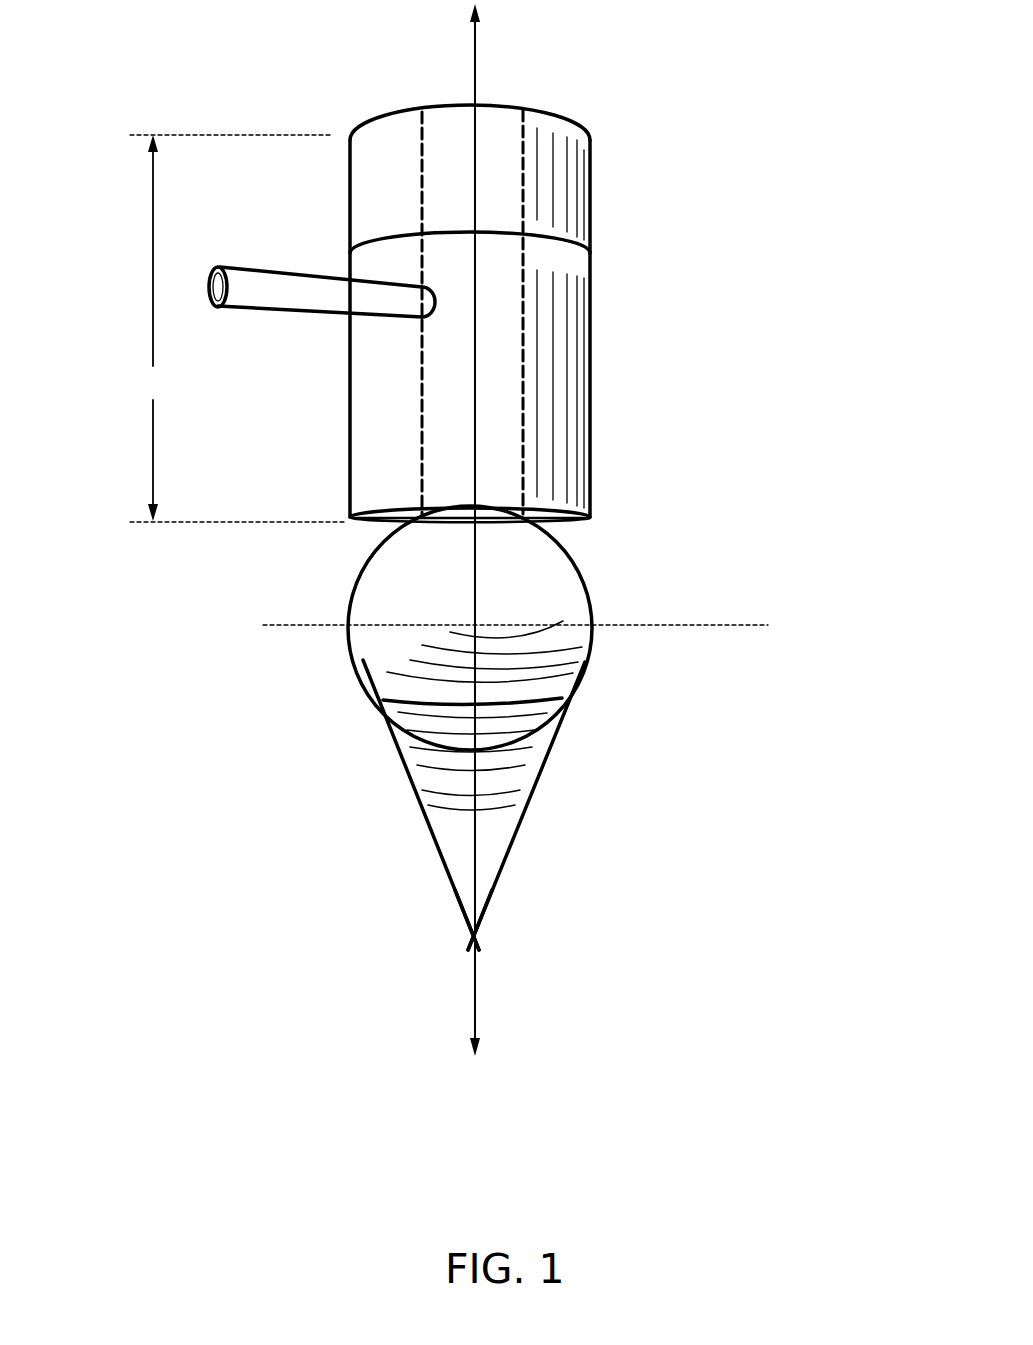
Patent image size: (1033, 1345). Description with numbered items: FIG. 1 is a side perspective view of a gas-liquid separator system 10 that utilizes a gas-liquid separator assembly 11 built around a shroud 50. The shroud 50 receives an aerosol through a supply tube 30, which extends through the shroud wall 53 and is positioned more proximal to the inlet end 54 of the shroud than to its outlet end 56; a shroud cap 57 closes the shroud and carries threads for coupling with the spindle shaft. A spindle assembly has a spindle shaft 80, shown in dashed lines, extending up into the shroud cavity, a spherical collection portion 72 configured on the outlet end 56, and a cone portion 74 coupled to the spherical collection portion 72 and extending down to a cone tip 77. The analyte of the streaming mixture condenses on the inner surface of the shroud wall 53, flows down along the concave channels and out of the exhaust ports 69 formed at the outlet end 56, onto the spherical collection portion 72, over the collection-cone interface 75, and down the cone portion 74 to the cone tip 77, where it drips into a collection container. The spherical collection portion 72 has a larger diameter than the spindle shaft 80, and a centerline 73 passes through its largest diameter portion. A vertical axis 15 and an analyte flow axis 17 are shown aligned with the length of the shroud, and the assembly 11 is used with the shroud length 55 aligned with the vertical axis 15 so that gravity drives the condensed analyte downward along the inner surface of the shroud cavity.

The gas-liquid separator system 10 is at (280, 81).
The gas-liquid separator assembly 11 is at (546, 138).
The vertical axis 15 is at (475, 52).
The analyte flow axis 17 is at (475, 82).
The spindle shaft 80 is at (492, 143).
The shroud cap 57 is at (592, 148).
The inlet end 54 is at (592, 252).
The shroud 50 is at (592, 313).
The shroud wall 53 is at (592, 362).
The outlet end 56 is at (605, 530).
The exhaust ports 69 is at (382, 538).
The shroud length 55 is at (237, 328).
The supply tube 30 is at (282, 290).
The spherical collection portion 72 is at (398, 607).
The centerline 73 is at (578, 616).
The collection-cone interface 75 is at (578, 676).
The cone portion 74 is at (465, 795).
The cone tip 77 is at (470, 945).